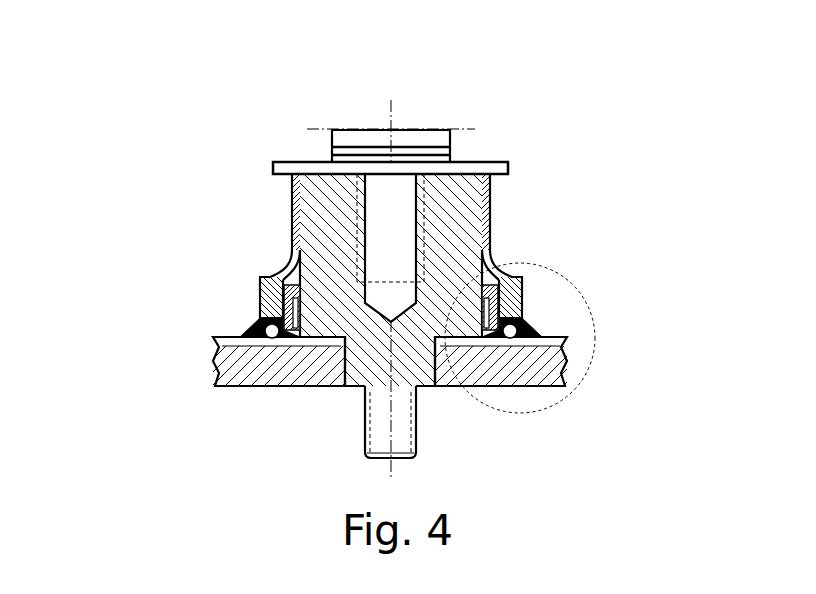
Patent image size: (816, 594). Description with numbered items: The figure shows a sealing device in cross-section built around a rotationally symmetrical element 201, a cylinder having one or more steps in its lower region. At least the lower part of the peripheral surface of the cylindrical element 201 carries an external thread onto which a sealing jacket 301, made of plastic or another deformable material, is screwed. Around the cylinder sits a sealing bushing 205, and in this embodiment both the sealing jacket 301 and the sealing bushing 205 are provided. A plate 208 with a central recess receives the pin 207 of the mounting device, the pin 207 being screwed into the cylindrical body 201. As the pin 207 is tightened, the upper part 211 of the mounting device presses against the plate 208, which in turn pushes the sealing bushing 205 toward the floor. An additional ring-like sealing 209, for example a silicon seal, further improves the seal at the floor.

The rotationally symmetrical element 201 is at (303, 238).
The sealing bushing 205 is at (292, 205).
The pin 207 is at (403, 238).
The plate 208 is at (482, 162).
The ring-like sealing 209 is at (540, 322).
The upper part of the mounting device 211 is at (413, 140).
The sealing jacket 301 is at (500, 305).